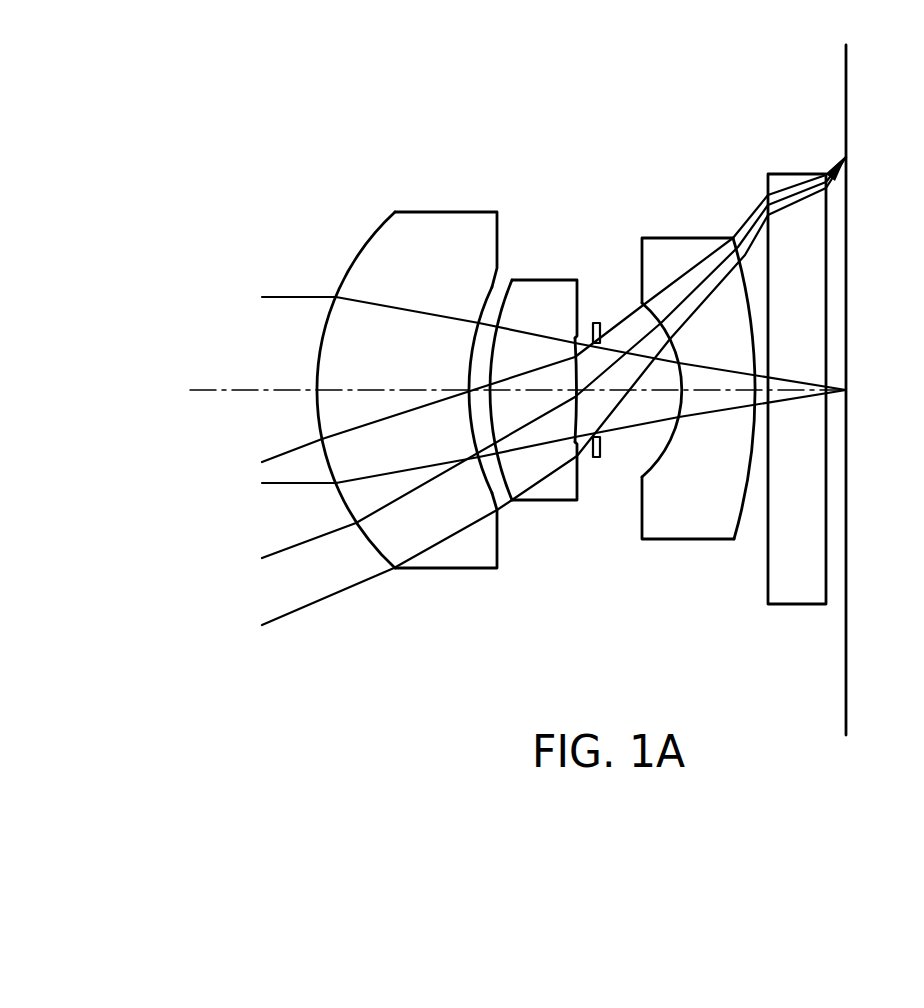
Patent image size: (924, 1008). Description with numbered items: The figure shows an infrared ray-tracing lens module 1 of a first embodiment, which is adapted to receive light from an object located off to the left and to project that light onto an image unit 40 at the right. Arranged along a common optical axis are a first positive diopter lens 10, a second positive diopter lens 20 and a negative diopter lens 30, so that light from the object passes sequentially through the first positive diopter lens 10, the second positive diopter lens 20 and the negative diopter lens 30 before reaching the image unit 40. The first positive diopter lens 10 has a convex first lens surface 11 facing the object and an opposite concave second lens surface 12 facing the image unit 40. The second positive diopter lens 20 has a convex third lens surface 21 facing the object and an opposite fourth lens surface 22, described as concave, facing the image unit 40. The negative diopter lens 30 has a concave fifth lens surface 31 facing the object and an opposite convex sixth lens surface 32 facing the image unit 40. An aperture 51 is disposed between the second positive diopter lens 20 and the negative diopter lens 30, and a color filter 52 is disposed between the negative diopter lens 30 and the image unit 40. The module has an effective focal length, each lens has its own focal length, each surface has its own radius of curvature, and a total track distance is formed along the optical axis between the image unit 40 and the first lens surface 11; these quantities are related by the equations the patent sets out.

The infrared ray-tracing lens module 1 is at (215, 79).
The first positive diopter lens 10 is at (432, 403).
The first lens surface 11 is at (381, 226).
The second lens surface 12 is at (492, 287).
The second positive diopter lens 20 is at (517, 385).
The third lens surface 21 is at (490, 358).
The fourth lens surface 22 is at (578, 337).
The negative diopter lens 30 is at (682, 435).
The fifth lens surface 31 is at (671, 447).
The sixth lens surface 32 is at (745, 512).
The image unit 40 is at (849, 677).
The aperture 51 is at (597, 458).
The color filter 52 is at (798, 604).